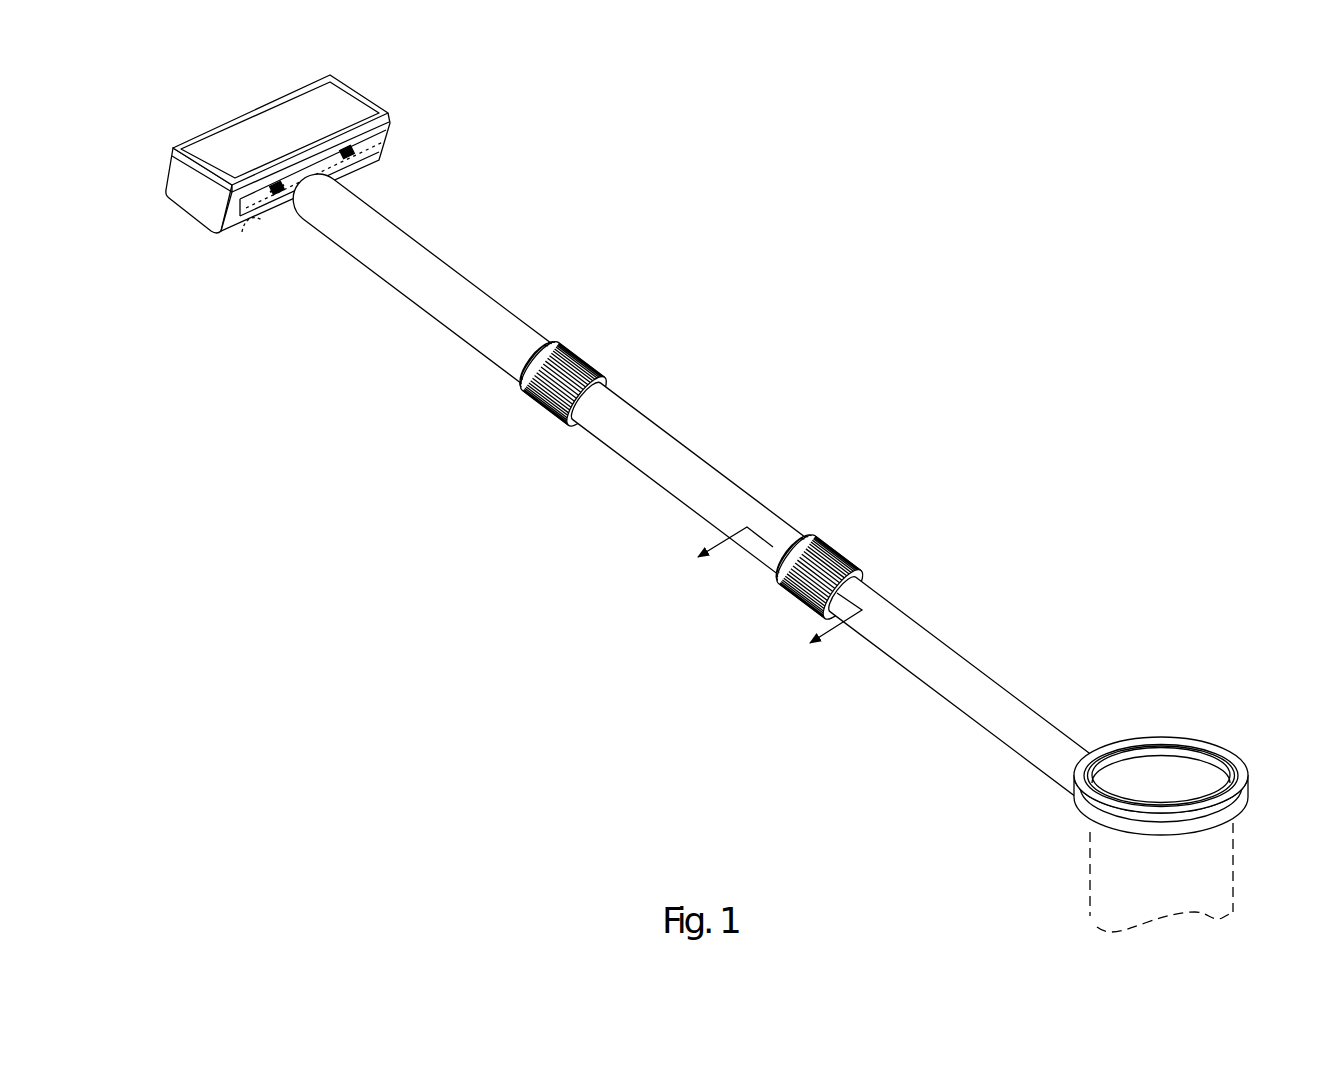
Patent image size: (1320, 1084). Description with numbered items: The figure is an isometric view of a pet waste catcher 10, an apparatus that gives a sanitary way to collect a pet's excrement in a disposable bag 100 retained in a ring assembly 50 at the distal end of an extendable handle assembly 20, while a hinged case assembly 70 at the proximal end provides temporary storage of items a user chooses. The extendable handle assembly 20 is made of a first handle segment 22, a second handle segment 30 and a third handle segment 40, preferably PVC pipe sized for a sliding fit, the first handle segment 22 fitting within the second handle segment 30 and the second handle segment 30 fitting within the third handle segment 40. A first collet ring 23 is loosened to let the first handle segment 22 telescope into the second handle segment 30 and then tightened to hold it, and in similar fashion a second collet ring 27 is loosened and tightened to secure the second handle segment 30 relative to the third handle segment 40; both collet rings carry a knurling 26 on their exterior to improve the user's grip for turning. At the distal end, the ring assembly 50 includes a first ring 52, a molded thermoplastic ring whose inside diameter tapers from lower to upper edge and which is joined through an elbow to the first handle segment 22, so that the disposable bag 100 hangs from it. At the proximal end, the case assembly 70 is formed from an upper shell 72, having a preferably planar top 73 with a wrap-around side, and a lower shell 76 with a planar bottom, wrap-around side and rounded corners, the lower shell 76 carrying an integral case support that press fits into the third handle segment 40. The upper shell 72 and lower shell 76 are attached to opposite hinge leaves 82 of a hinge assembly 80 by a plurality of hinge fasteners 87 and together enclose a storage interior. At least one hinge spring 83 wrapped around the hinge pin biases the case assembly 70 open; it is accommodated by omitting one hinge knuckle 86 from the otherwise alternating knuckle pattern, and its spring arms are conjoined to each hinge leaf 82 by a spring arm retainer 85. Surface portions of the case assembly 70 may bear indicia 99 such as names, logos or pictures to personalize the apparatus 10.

The pet waste catcher 10 is at (937, 243).
The extendable handle assembly 20 is at (696, 484).
The first handle segment 22 is at (967, 675).
The first collet ring 23 is at (797, 597).
The knurling 26 is at (581, 391).
The second collet ring 27 is at (548, 412).
The second handle segment 30 is at (750, 497).
The third handle segment 40 is at (482, 307).
The ring assembly 50 is at (1181, 763).
The first ring 52 is at (1242, 794).
The case assembly 70 is at (274, 187).
The upper shell 72 is at (363, 97).
The top 73 is at (210, 142).
The lower shell 76 is at (175, 182).
The hinge assembly 80 is at (242, 232).
The hinge leaves 82 is at (385, 136).
The hinge spring 83 is at (280, 198).
The spring arm retainer 85 is at (272, 198).
The hinge knuckle 86 is at (352, 170).
The hinge fasteners 87 is at (368, 140).
The indicia 99 is at (282, 128).
The disposable bag 100 is at (1090, 865).